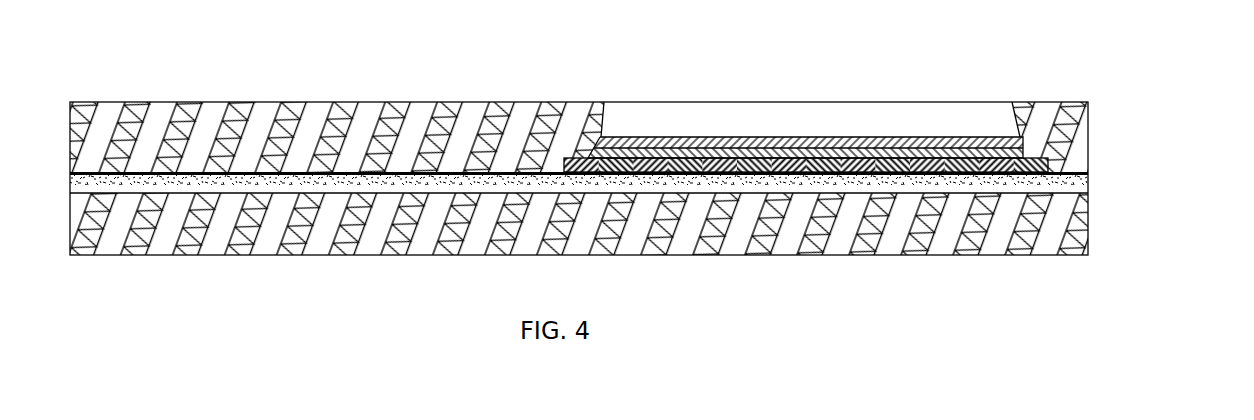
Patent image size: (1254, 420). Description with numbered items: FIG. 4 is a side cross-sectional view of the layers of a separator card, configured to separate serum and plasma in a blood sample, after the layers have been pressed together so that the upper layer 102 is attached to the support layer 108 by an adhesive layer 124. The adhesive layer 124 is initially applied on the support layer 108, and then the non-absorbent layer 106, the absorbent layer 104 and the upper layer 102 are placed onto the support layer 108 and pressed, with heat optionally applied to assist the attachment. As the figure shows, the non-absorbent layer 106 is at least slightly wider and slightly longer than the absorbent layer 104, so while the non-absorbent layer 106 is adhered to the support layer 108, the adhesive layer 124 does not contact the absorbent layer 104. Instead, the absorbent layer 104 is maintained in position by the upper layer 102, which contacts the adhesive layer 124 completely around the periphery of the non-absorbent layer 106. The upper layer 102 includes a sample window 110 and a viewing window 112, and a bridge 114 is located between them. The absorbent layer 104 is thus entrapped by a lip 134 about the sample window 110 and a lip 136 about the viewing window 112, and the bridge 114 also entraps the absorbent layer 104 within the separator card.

The upper layer 102 is at (1067, 102).
The absorbent layer 104 is at (837, 136).
The non-absorbent layer 106 is at (1075, 150).
The support layer 108 is at (1089, 220).
The sample window 110 is at (683, 121).
The viewing window 112 is at (718, 122).
The bridge 114 is at (716, 136).
The adhesive layer 124 is at (1089, 182).
The lip 134 is at (627, 137).
The lip 136 is at (1003, 133).